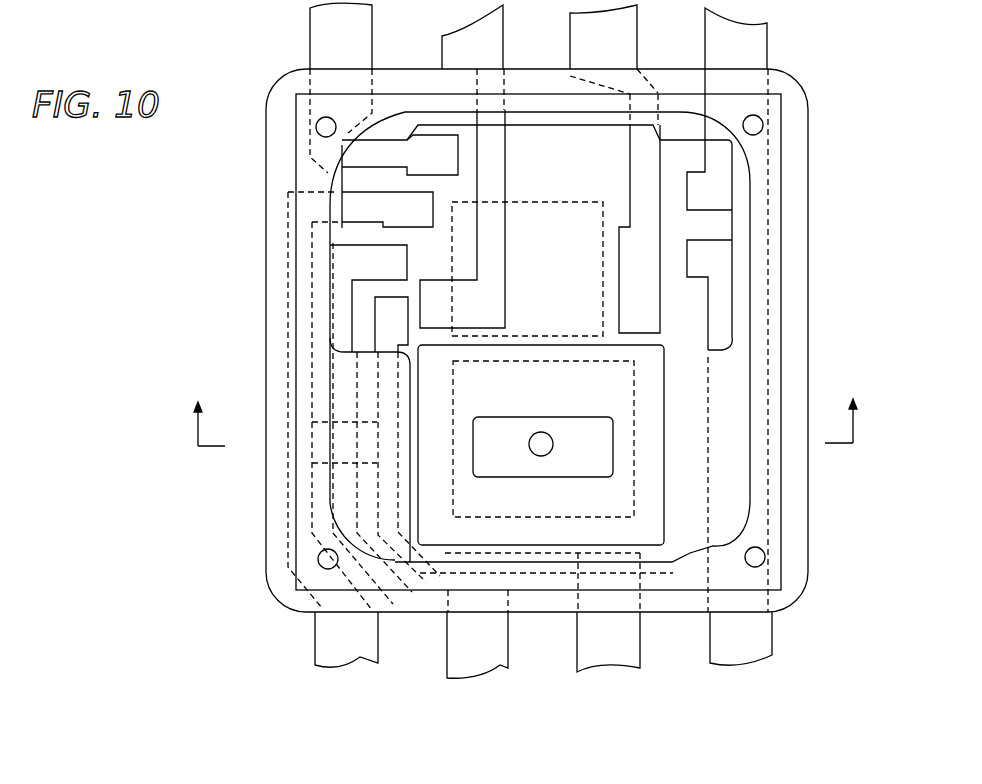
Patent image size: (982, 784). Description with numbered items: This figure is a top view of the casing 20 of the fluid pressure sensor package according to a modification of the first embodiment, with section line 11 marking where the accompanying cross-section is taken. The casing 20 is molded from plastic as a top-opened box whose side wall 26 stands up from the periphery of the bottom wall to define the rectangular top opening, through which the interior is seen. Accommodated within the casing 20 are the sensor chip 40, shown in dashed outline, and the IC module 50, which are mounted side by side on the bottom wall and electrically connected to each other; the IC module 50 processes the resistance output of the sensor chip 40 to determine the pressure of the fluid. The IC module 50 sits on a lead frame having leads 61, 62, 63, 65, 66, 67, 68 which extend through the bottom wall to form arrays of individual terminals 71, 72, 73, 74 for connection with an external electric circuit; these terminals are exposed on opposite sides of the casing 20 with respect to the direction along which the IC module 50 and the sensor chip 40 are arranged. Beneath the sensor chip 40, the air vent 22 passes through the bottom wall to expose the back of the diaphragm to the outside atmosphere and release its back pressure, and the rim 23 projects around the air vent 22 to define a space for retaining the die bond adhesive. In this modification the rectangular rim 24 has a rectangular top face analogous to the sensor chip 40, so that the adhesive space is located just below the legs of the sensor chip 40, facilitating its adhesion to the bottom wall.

The section line 11 is at (529, 406).
The casing 20 is at (307, 527).
The air vent 22 is at (541, 450).
The rim 23 is at (607, 458).
The rectangular rim 24 is at (318, 452).
The side wall 26 is at (797, 213).
The sensor chip 40 is at (452, 498).
The IC module 50 is at (590, 265).
The lead 61 is at (288, 207).
The lead 62 is at (312, 250).
The lead 63 is at (330, 322).
The lead 65 is at (388, 150).
The lead 66 is at (493, 170).
The lead 67 is at (643, 163).
The lead 68 is at (707, 190).
The terminal 71 is at (364, 652).
The terminal 72 is at (467, 653).
The terminal 73 is at (630, 657).
The terminal 74 is at (757, 648).